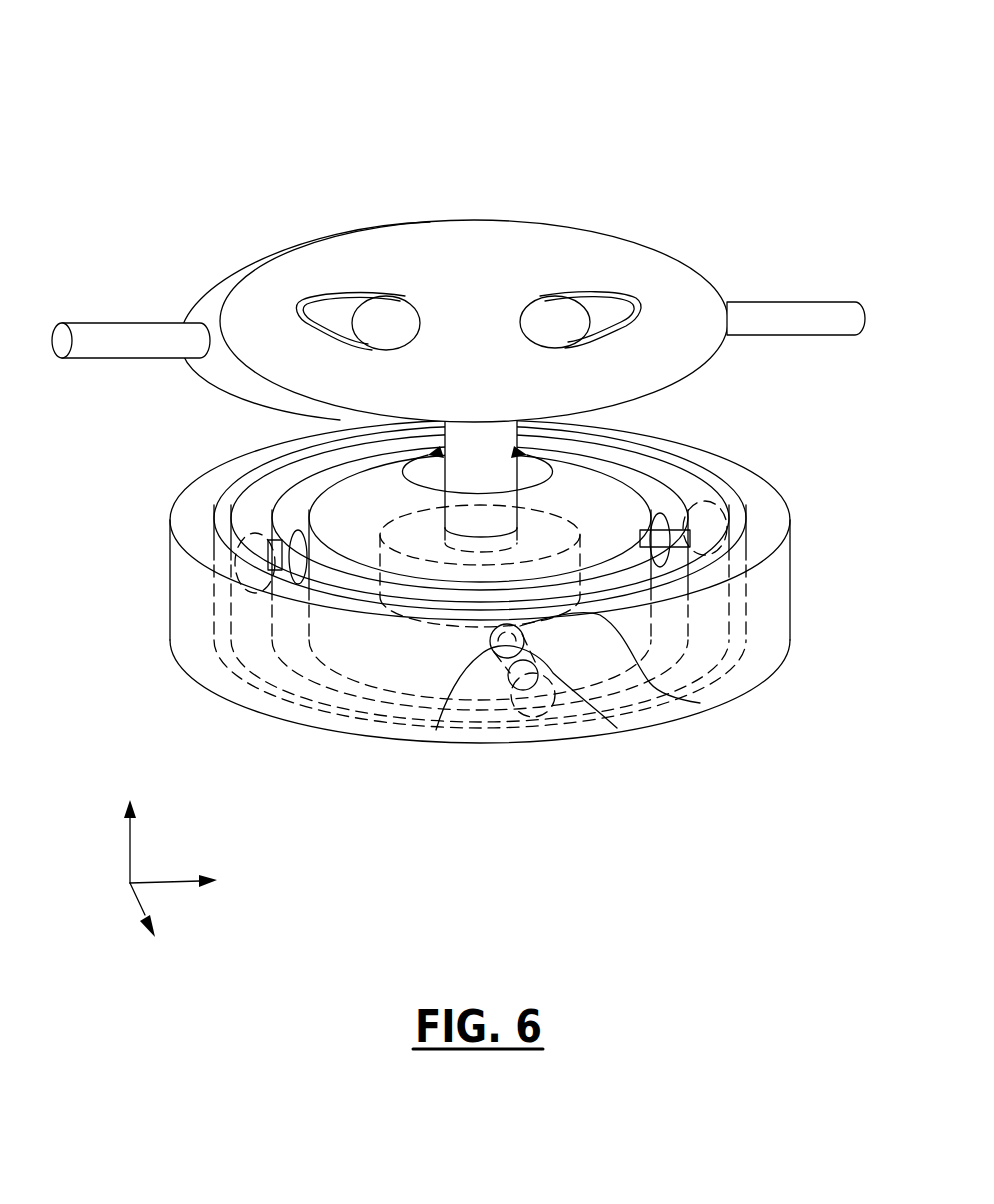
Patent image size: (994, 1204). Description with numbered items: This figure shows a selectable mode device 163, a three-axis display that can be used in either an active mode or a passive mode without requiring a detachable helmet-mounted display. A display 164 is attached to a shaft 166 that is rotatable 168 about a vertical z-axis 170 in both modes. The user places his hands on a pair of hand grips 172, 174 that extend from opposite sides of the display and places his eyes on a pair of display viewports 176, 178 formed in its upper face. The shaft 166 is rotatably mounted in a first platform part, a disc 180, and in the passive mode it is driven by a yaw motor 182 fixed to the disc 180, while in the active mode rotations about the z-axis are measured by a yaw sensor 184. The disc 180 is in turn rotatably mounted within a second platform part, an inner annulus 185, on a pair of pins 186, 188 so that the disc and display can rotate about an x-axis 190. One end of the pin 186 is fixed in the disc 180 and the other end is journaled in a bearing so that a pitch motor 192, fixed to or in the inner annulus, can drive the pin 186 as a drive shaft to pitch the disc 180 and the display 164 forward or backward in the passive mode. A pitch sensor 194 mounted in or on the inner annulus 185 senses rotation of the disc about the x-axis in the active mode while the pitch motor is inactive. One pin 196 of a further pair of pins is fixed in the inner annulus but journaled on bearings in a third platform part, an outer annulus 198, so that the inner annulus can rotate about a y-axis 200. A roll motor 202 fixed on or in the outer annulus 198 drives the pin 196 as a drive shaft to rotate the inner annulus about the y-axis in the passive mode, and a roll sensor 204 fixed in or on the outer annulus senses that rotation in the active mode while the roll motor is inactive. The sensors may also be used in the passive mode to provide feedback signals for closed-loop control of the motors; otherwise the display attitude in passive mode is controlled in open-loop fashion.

The selectable mode device 163 is at (267, 141).
The display 164 is at (607, 235).
The shaft 166 is at (490, 445).
The rotation about the z-axis 168 is at (697, 503).
The z-axis 170 is at (133, 848).
The hand grip 172 is at (107, 343).
The hand grip 174 is at (778, 315).
The display viewport 176 is at (388, 313).
The display viewport 178 is at (566, 316).
The disc 180 is at (600, 530).
The yaw motor 182 is at (690, 663).
The yaw sensor 184 is at (655, 650).
The inner annulus 185 is at (700, 481).
The pin 186 is at (237, 540).
The pin 188 is at (600, 485).
The x-axis 190 is at (170, 877).
The pitch motor 192 is at (227, 510).
The pitch sensor 194 is at (722, 522).
The pin 196 is at (436, 730).
The outer annulus 198 is at (167, 603).
The y-axis 200 is at (133, 905).
The roll motor 202 is at (560, 705).
The roll sensor 204 is at (568, 703).